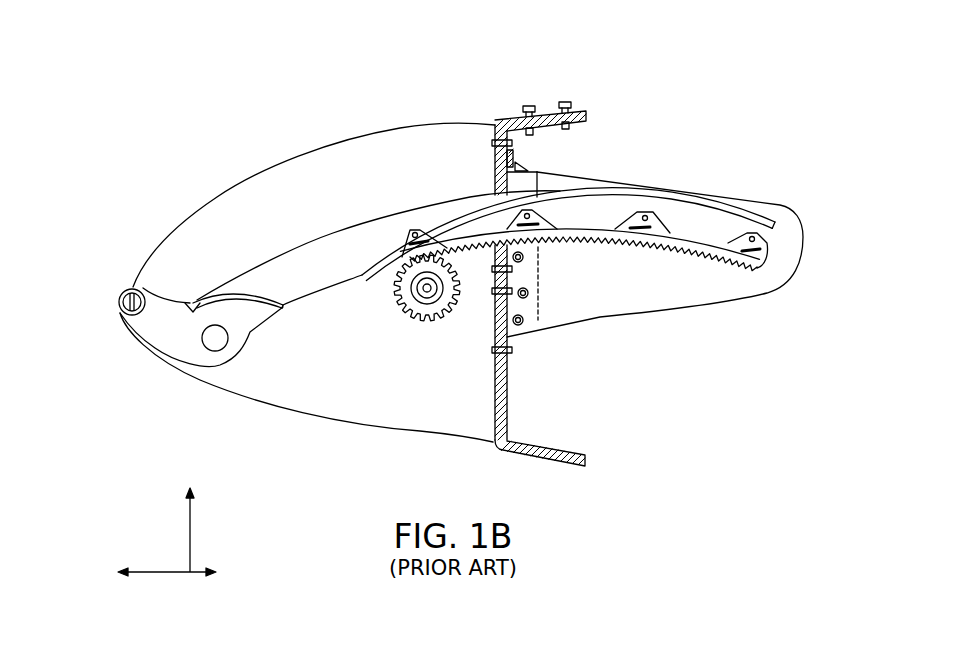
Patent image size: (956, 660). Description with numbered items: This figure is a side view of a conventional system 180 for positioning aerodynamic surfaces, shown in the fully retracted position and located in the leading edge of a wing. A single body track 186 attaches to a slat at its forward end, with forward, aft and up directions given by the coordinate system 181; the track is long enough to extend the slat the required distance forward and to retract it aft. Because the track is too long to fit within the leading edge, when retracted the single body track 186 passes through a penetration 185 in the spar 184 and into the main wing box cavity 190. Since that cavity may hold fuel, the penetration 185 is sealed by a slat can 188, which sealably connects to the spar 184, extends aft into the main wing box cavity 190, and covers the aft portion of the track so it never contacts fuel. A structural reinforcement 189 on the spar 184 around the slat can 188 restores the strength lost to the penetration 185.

The conventional system 180 is at (200, 88).
The coordinate system 181 is at (171, 554).
The spar 184 is at (508, 373).
The penetration 185 is at (493, 187).
The single body track 186 is at (327, 243).
The slat can 188 is at (690, 310).
The structural reinforcement 189 is at (520, 173).
The main wing box cavity 190 is at (700, 420).